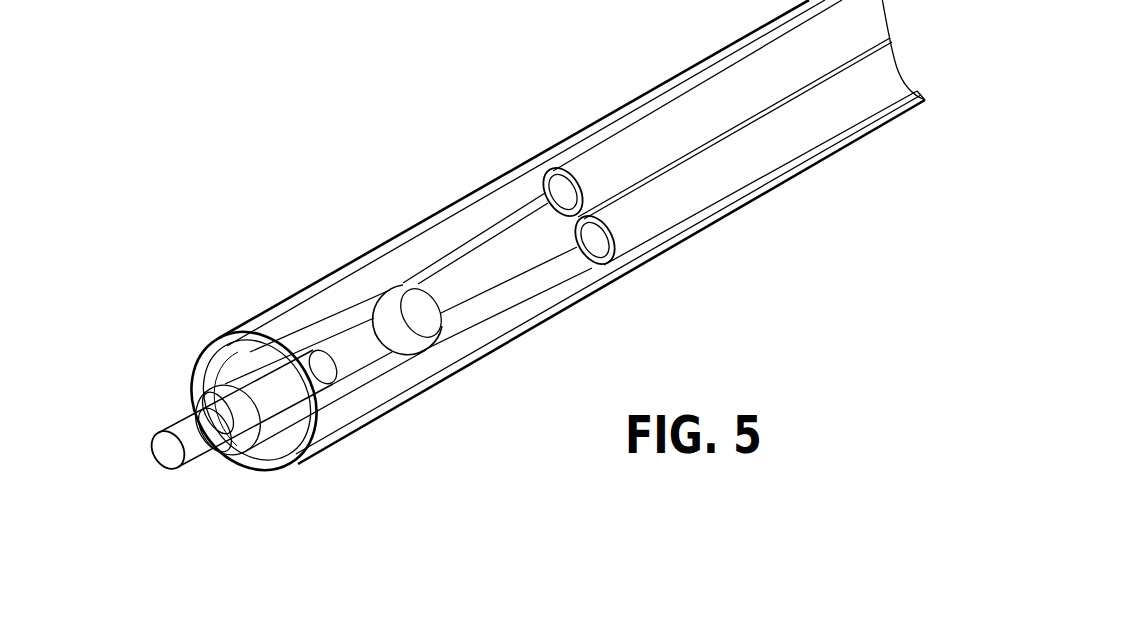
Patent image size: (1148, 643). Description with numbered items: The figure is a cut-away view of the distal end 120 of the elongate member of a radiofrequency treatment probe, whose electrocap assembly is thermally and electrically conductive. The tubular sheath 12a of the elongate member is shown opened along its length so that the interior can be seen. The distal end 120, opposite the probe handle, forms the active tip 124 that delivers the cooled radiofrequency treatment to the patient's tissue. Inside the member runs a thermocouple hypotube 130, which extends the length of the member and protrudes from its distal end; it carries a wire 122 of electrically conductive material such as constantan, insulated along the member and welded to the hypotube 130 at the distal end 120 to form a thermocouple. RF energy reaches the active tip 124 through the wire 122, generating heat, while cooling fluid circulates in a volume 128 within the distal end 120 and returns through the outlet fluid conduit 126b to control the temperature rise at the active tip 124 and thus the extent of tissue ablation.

The outer tube / sheath 12a is at (777, 150).
The distal end 120 is at (338, 458).
The wire 122 is at (379, 352).
The active tip 124 is at (141, 467).
The outlet fluid conduit 126b is at (727, 93).
The volume 128 is at (362, 292).
The thermocouple hypotube 130 is at (541, 282).